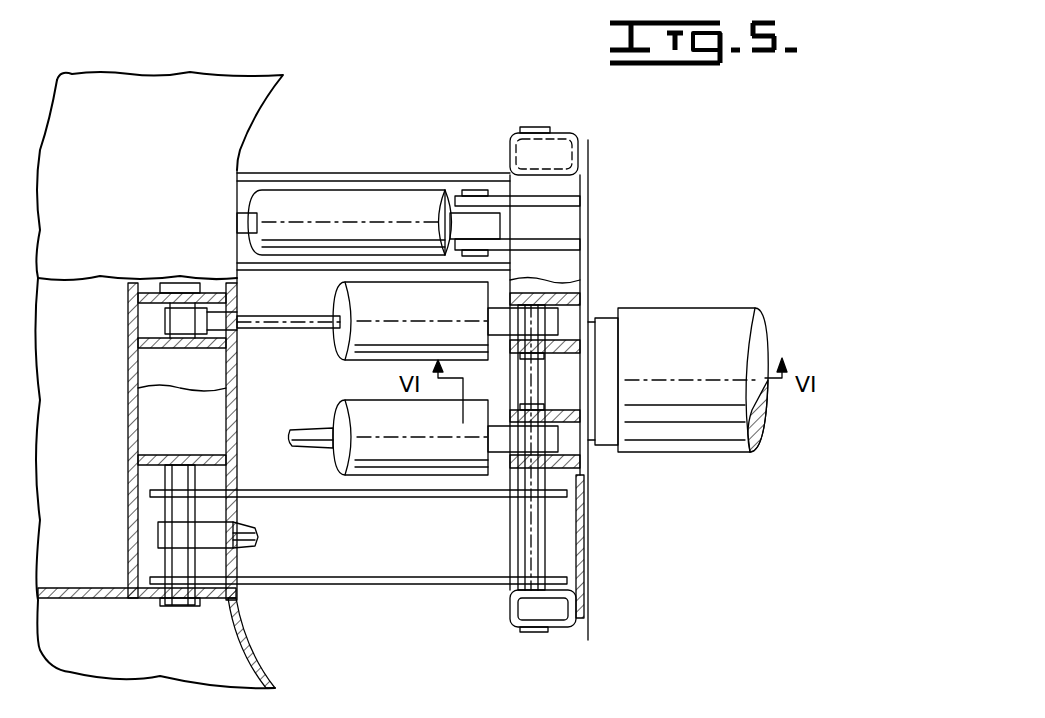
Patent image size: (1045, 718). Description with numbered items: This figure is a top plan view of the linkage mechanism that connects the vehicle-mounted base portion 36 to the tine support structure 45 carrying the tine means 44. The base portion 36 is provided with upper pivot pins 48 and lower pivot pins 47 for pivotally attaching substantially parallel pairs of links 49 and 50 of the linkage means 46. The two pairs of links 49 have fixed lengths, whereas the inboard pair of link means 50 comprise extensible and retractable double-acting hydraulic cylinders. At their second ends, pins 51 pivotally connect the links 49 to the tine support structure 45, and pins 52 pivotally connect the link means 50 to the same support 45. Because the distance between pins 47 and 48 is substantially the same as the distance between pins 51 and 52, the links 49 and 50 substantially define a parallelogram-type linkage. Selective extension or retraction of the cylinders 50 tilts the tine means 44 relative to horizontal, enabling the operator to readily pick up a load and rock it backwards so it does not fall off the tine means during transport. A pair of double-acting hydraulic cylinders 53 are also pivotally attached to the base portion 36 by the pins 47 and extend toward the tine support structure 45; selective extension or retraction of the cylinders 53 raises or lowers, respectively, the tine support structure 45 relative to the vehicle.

The base portion 36 is at (142, 238).
The tine means 44 is at (712, 377).
The tine support structure 45 is at (573, 262).
The linkage means 46 is at (413, 160).
The lower pivot pins 47 is at (182, 478).
The upper pivot pins 48 is at (165, 357).
The links 49 is at (305, 173).
The link means 50 is at (365, 345).
The pins 51 is at (523, 520).
The pins 52 is at (530, 355).
The double-acting hydraulic cylinders 53 is at (383, 200).